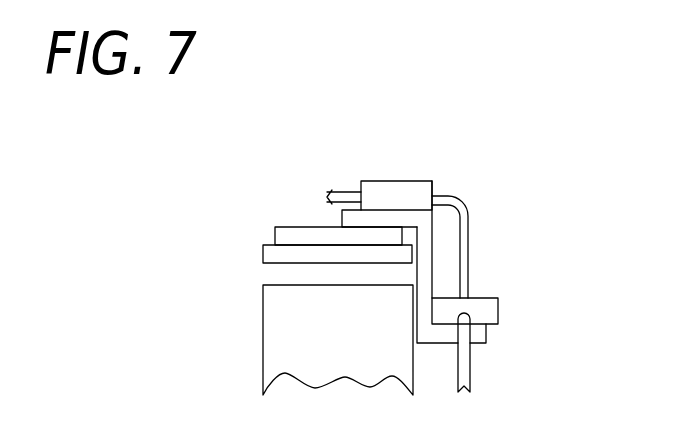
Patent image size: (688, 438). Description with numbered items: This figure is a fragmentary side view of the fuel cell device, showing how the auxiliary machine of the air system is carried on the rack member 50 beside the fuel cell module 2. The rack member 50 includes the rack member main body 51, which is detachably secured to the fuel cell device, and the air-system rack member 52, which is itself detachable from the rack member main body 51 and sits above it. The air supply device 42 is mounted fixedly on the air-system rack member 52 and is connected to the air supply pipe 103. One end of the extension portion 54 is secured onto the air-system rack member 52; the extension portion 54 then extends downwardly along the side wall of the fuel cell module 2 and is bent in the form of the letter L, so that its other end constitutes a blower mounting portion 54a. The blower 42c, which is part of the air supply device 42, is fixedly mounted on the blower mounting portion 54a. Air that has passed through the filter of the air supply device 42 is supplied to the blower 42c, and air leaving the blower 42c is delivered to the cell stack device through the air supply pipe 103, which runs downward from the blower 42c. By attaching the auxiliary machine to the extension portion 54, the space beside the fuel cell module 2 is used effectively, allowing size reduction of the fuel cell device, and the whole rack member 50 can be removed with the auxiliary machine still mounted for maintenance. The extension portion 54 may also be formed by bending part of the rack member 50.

The air supply device 42 is at (375, 188).
The extension portion 54 is at (425, 238).
The rack member 50 is at (410, 256).
The air-system rack member 52 is at (282, 233).
The rack member main body 51 is at (275, 258).
The fuel cell module 2 is at (288, 358).
The blower 42c is at (484, 311).
The blower mounting portion 54a is at (487, 338).
The air supply pipe 103 is at (465, 362).